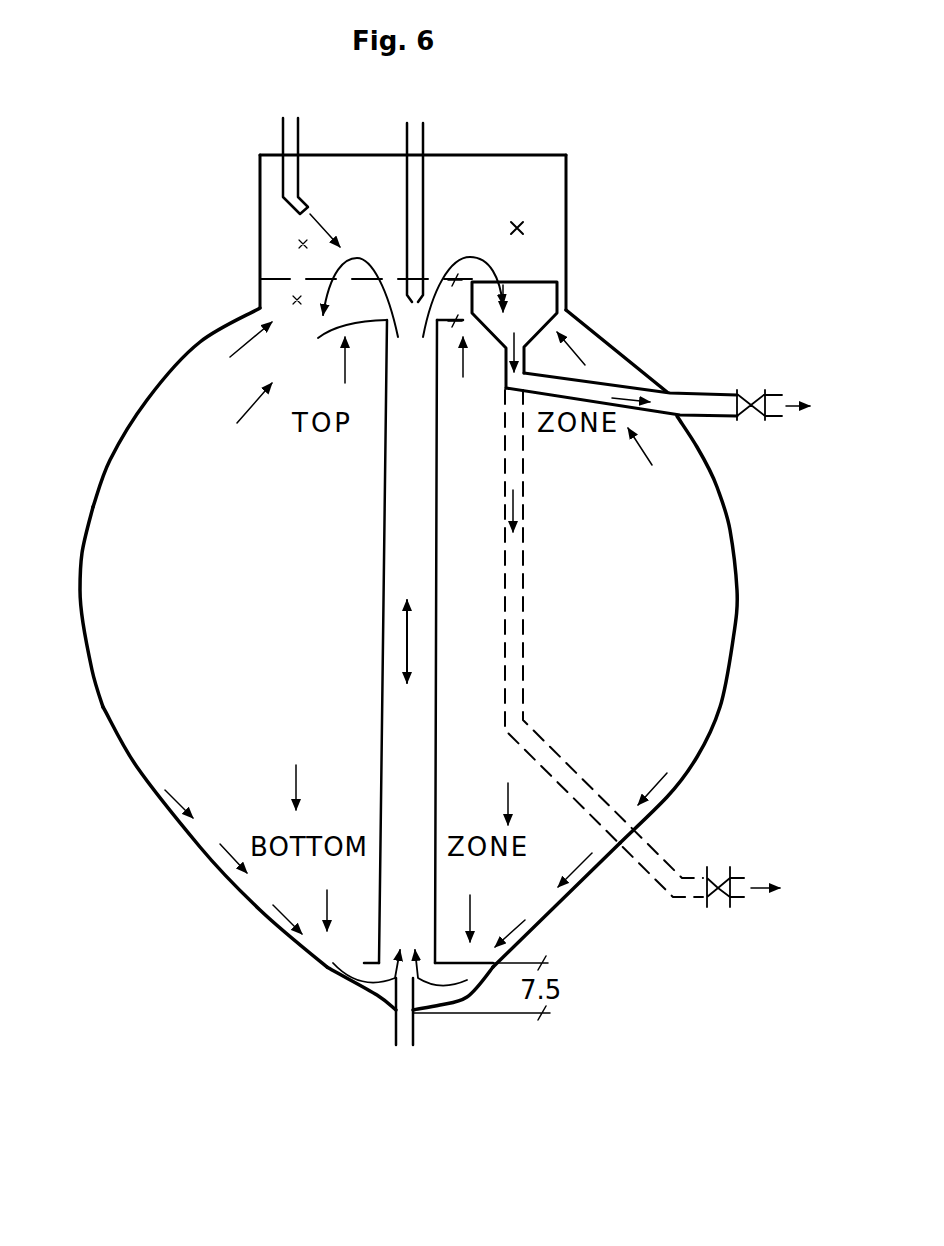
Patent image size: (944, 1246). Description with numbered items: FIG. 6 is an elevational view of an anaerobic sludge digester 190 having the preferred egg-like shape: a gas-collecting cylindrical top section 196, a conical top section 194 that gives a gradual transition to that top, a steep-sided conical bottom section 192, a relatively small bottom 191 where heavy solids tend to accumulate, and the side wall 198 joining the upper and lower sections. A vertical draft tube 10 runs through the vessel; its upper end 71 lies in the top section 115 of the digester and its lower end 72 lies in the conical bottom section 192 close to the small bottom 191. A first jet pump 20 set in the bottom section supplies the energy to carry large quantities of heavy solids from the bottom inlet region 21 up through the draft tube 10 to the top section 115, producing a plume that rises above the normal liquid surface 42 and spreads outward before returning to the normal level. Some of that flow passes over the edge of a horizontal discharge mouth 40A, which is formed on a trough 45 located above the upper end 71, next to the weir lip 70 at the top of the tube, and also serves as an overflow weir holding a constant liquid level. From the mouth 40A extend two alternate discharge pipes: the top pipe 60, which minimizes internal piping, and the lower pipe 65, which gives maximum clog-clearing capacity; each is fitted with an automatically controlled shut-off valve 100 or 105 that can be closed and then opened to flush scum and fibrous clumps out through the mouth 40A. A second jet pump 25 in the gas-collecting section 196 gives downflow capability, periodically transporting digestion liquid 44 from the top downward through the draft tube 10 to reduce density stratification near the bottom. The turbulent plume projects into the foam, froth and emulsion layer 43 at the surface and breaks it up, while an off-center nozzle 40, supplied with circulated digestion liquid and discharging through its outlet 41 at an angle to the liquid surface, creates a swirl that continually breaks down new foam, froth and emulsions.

The draft tube 10 is at (383, 640).
The first jet pump 20 is at (414, 1036).
The bottom inlet flow 21 is at (398, 980).
The second jet pump 25 is at (424, 137).
The nozzle 40 is at (299, 148).
The horizontal discharge mouth 40A is at (538, 279).
The inlet pipe outlet 41 is at (312, 208).
The normal liquid surface 42 is at (327, 279).
The foam, froth, and/or emulsion layer 43 is at (303, 244).
The digestion liquid 44 is at (293, 300).
The trough 45 is at (560, 300).
The top discharge pipe 60 is at (673, 392).
The lower discharge pipe 65 is at (672, 870).
The overflow weir 70 is at (455, 300).
The upper end of the draft tube 71 is at (350, 312).
The lower end of the draft tube 72 is at (364, 962).
The shut-off valve 100 is at (740, 413).
The shut-off valve 105 is at (712, 903).
The top section 115 is at (548, 152).
The digester 190 is at (745, 586).
The small bottom 191 is at (388, 1008).
The conical bottom section 192 is at (198, 848).
The conical top section 194 is at (147, 400).
The gas-collecting cylindrical top section 196 is at (568, 193).
The vessel side wall 198 is at (82, 555).